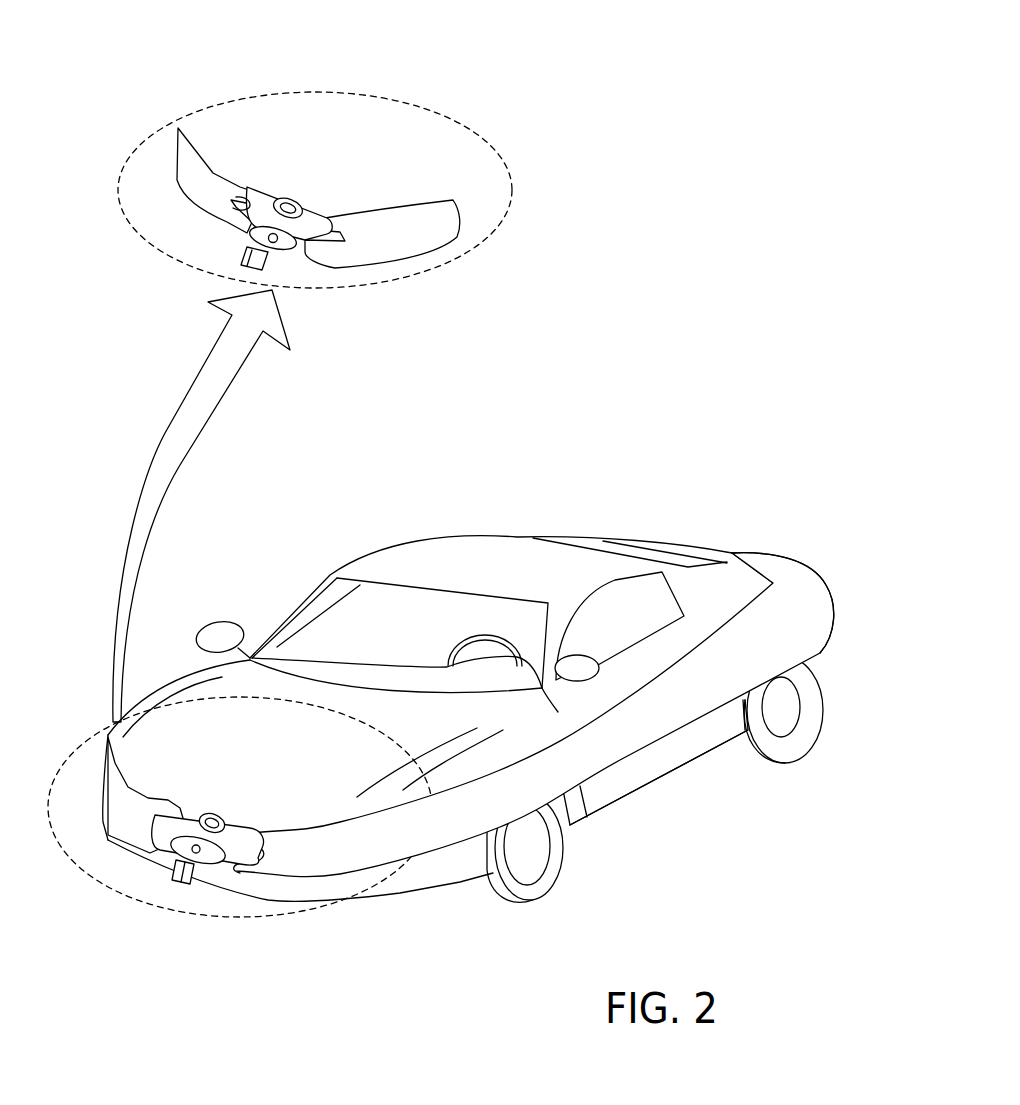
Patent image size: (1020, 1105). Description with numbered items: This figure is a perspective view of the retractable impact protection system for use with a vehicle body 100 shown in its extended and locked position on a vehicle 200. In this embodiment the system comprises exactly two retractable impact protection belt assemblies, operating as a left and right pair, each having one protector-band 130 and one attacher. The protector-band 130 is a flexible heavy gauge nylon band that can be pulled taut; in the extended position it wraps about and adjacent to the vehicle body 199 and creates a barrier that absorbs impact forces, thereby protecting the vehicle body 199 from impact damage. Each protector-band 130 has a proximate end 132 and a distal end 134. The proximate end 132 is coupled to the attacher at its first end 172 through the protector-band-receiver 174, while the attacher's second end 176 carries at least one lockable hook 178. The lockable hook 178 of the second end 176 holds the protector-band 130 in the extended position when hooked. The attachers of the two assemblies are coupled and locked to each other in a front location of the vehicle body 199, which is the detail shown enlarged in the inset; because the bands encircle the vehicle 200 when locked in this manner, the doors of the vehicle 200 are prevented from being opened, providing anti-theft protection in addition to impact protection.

The retractable impact protection system for use with a vehicle body 100 is at (625, 80).
The protector-band 130 is at (784, 590).
The proximate end 132 is at (234, 878).
The distal end 134 is at (755, 550).
The first end 172 is at (250, 204).
The protector-band-receiver 174 is at (252, 188).
The second end 176 is at (290, 196).
The lockable hook 178 is at (300, 197).
The vehicle body 199 is at (600, 796).
The vehicle 200 is at (418, 540).